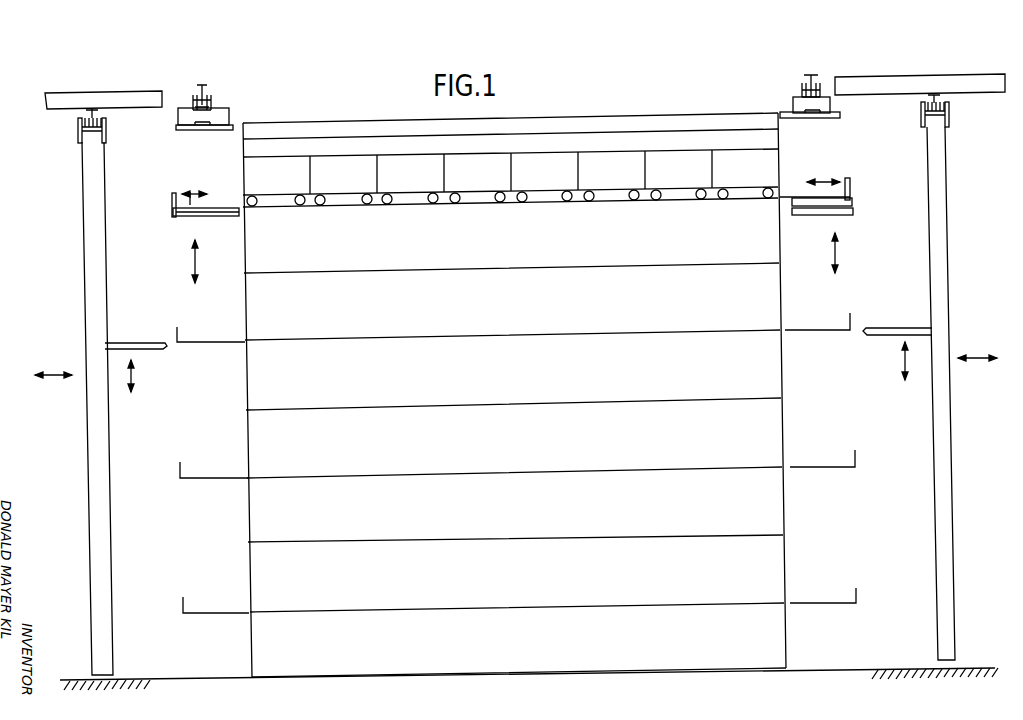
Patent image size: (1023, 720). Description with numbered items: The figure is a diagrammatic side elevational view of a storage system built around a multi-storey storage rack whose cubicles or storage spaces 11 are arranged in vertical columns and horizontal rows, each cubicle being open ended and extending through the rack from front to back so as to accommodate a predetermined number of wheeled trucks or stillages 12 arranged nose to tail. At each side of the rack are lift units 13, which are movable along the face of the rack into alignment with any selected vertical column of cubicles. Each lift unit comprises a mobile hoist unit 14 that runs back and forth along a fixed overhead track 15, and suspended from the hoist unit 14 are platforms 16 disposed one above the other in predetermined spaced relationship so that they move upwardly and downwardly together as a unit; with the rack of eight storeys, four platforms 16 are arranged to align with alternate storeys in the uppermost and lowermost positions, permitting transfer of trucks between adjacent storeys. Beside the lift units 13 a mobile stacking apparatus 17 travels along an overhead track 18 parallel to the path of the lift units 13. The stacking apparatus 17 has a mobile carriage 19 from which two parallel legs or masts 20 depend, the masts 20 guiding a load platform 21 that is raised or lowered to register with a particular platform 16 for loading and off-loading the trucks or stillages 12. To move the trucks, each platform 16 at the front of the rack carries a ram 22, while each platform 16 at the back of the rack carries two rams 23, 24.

The cubicle or storage space 11 is at (252, 287).
The wheeled truck or stillage 12 is at (415, 181).
The lift unit 13 is at (200, 407).
The mobile hoist unit 14 is at (225, 110).
The fixed overhead track 15 is at (210, 85).
The platform 16 is at (190, 196).
The mobile stacking apparatus 17 is at (80, 267).
The overhead track 18 is at (88, 112).
The mobile carriage 19 is at (80, 126).
The leg or mast 20 is at (87, 436).
The load platform 21 is at (128, 342).
The ram 22 is at (185, 220).
The ram 23 is at (807, 217).
The ram 24 is at (842, 212).